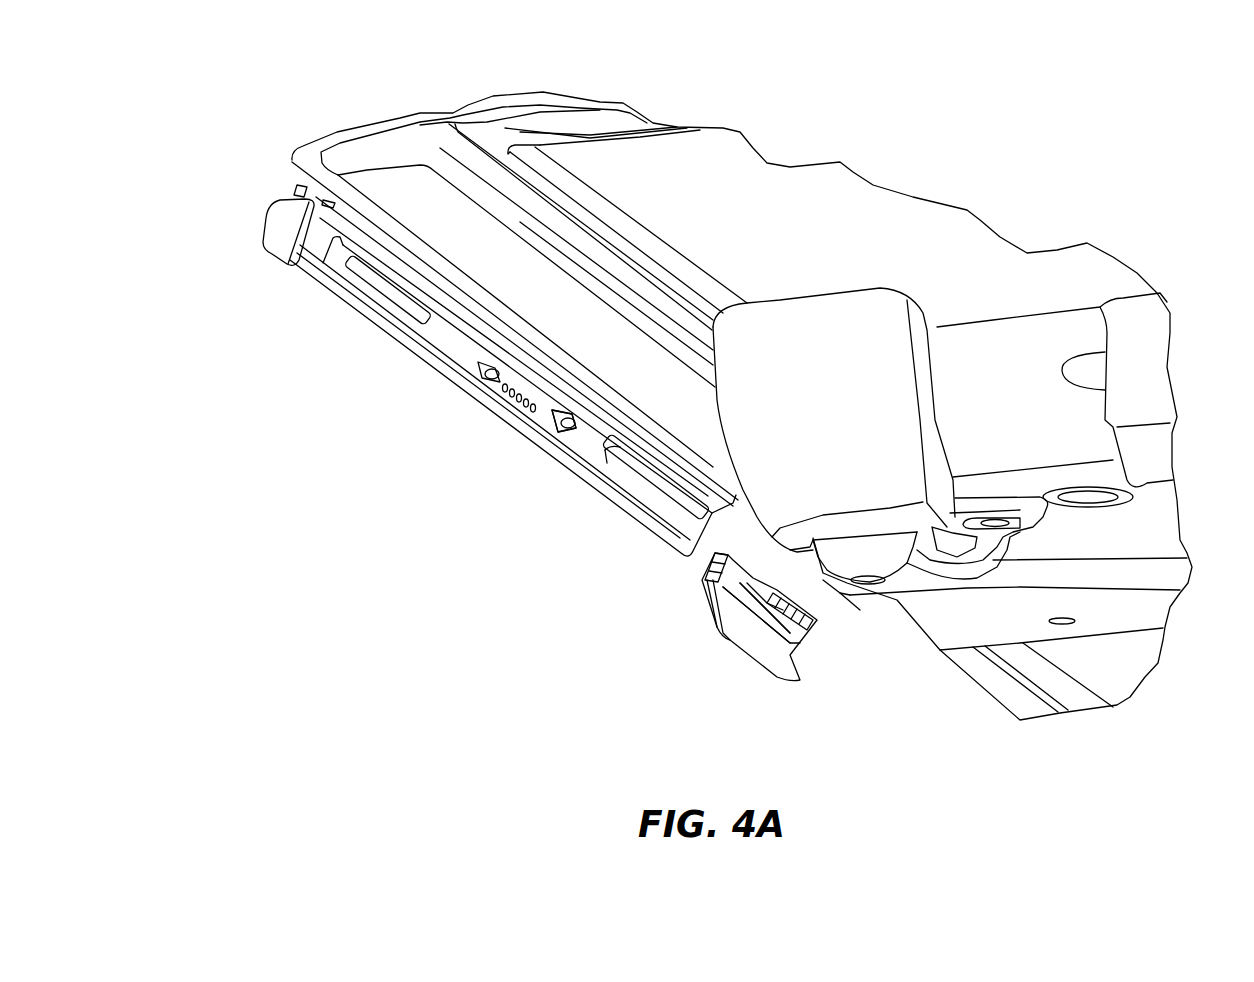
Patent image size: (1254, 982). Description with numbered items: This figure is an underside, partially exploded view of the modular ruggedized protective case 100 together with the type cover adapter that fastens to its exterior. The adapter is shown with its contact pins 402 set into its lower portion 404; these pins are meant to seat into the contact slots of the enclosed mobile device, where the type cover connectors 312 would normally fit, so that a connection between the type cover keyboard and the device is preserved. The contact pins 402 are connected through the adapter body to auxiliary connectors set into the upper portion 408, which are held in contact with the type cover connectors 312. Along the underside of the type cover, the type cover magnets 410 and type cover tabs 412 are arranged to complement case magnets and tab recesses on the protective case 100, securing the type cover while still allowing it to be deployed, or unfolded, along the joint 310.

The modular ruggedized protective case 100 is at (190, 103).
The joint 310 is at (317, 190).
The type cover connectors 312 is at (517, 400).
The contact pins 402 is at (797, 620).
The lower portion 404 is at (798, 668).
The upper portion 408 is at (740, 573).
The type cover magnets 410 is at (378, 280).
The type cover tabs 412 is at (470, 357).